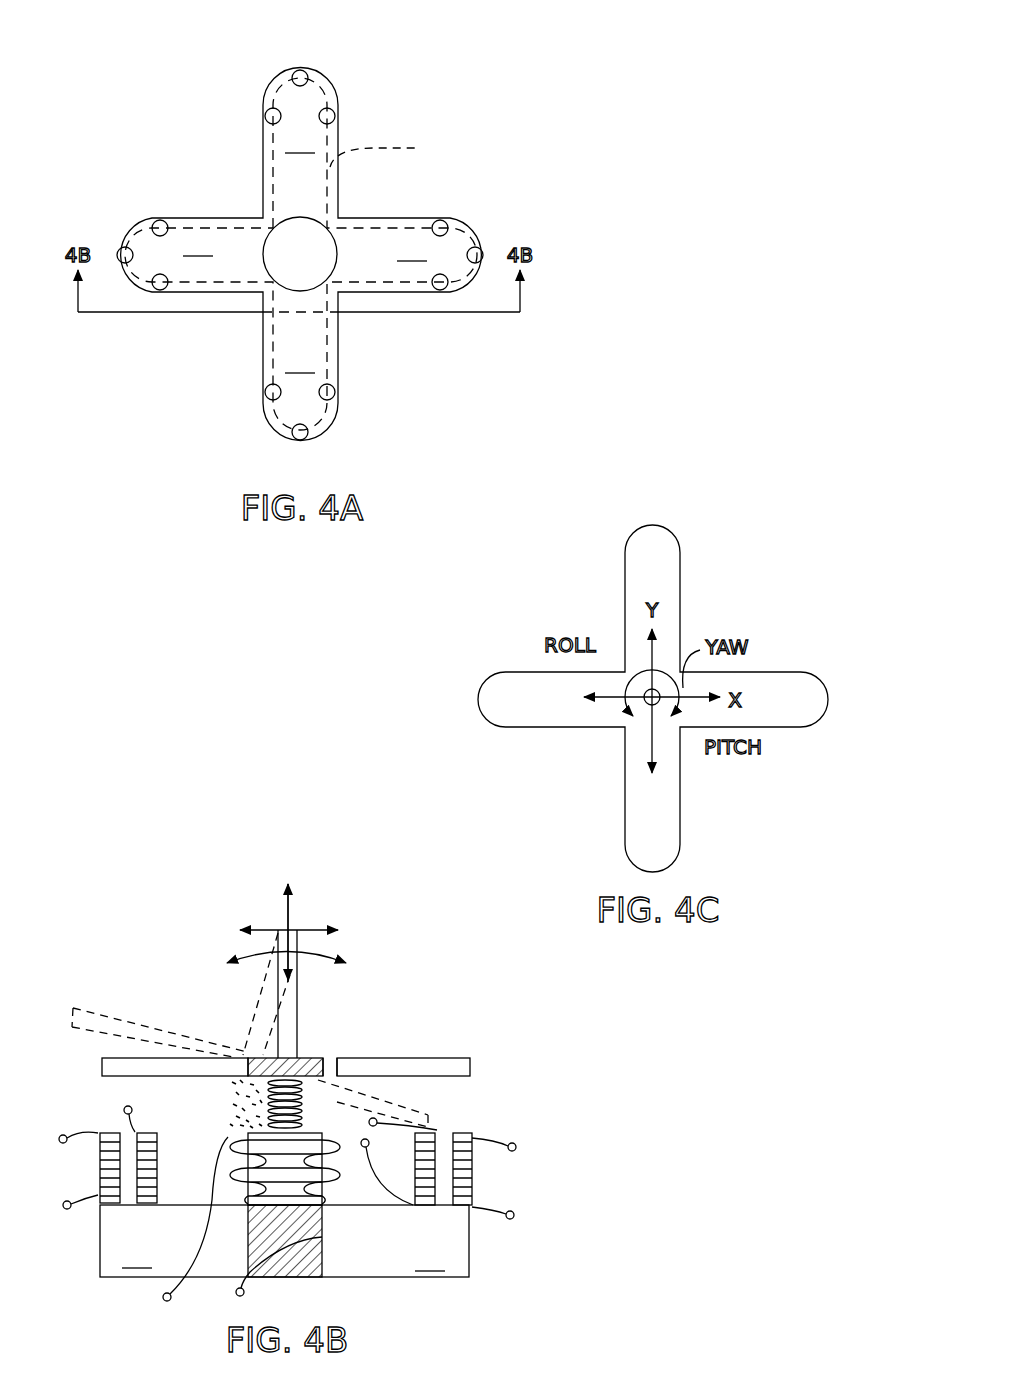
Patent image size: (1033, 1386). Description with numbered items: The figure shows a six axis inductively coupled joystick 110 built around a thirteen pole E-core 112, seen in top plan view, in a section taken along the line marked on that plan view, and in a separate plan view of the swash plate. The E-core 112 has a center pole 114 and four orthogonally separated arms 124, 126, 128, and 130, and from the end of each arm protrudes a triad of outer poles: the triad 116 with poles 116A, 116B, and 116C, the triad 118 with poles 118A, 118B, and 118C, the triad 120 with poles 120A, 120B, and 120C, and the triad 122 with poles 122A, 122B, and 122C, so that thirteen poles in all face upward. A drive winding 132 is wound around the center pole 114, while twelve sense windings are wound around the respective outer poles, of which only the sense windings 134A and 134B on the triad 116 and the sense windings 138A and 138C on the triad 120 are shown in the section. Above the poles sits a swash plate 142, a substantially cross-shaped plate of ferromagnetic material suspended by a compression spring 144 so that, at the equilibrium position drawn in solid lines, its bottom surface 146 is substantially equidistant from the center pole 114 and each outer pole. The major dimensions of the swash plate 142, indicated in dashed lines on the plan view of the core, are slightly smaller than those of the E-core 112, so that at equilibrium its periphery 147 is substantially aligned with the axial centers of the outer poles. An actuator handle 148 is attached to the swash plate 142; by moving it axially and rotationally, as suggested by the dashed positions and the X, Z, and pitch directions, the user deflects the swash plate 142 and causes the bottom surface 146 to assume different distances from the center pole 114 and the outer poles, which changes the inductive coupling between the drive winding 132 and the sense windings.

In FIG. 4B, the six axis joystick 110 is at (202, 1016).
In FIG. 4A, the 13 pole E-core 112 is at (228, 168).
In FIG. 4B, the 13 pole E-core 112 is at (204, 1287).
In FIG. 4A, the center pole 114 is at (320, 243).
In FIG. 4B, the center pole 114 is at (310, 1133).
In FIG. 4A, the triad of outer poles 116 is at (478, 208).
In FIG. 4A, the outer pole 116A is at (483, 253).
In FIG. 4B, the outer pole 116A is at (458, 1135).
In FIG. 4A, the outer pole 116B is at (440, 290).
In FIG. 4B, the outer pole 116B is at (425, 1133).
In FIG. 4A, the outer pole 116C is at (440, 220).
In FIG. 4A, the triad of outer poles 118 is at (352, 75).
In FIG. 4A, the outer pole 118A is at (306, 72).
In FIG. 4A, the outer pole 118B is at (335, 116).
In FIG. 4A, the outer pole 118C is at (265, 116).
In FIG. 4A, the triad of outer poles 120 is at (125, 213).
In FIG. 4A, the outer pole 120A is at (117, 252).
In FIG. 4B, the outer pole 120A is at (108, 1130).
In FIG. 4A, the outer pole 120B is at (162, 220).
In FIG. 4A, the outer pole 120C is at (162, 290).
In FIG. 4B, the outer pole 120C is at (148, 1130).
In FIG. 4A, the triad of outer poles 122 is at (260, 433).
In FIG. 4A, the outer pole 122A is at (300, 440).
In FIG. 4A, the outer pole 122B is at (265, 392).
In FIG. 4A, the outer pole 122C is at (335, 392).
In FIG. 4A, the arm 124 is at (412, 250).
In FIG. 4B, the arm 124 is at (430, 1260).
In FIG. 4A, the arm 126 is at (300, 142).
In FIG. 4A, the arm 128 is at (198, 245).
In FIG. 4B, the arm 128 is at (137, 1257).
In FIG. 4A, the arm 130 is at (300, 362).
In FIG. 4B, the drive winding 132 is at (228, 1137).
In FIG. 4B, the sense winding 134A is at (472, 1163).
In FIG. 4B, the sense winding 134B is at (420, 1205).
In FIG. 4B, the sense winding 138A is at (98, 1148).
In FIG. 4B, the sense winding 138C is at (150, 1203).
In FIG. 4A, the swash plate 142 is at (394, 153).
In FIG. 4C, the swash plate 142 is at (668, 818).
In FIG. 4B, the swash plate 142 is at (417, 1063).
In FIG. 4B, the compression spring 144 is at (303, 1095).
In FIG. 4B, the bottom surface 146 is at (102, 1065).
In FIG. 4C, the periphery 147 is at (810, 672).
In FIG. 4B, the periphery 147 is at (470, 1067).
In FIG. 4C, the actuator handle 148 is at (650, 707).
In FIG. 4B, the actuator handle 148 is at (278, 1018).